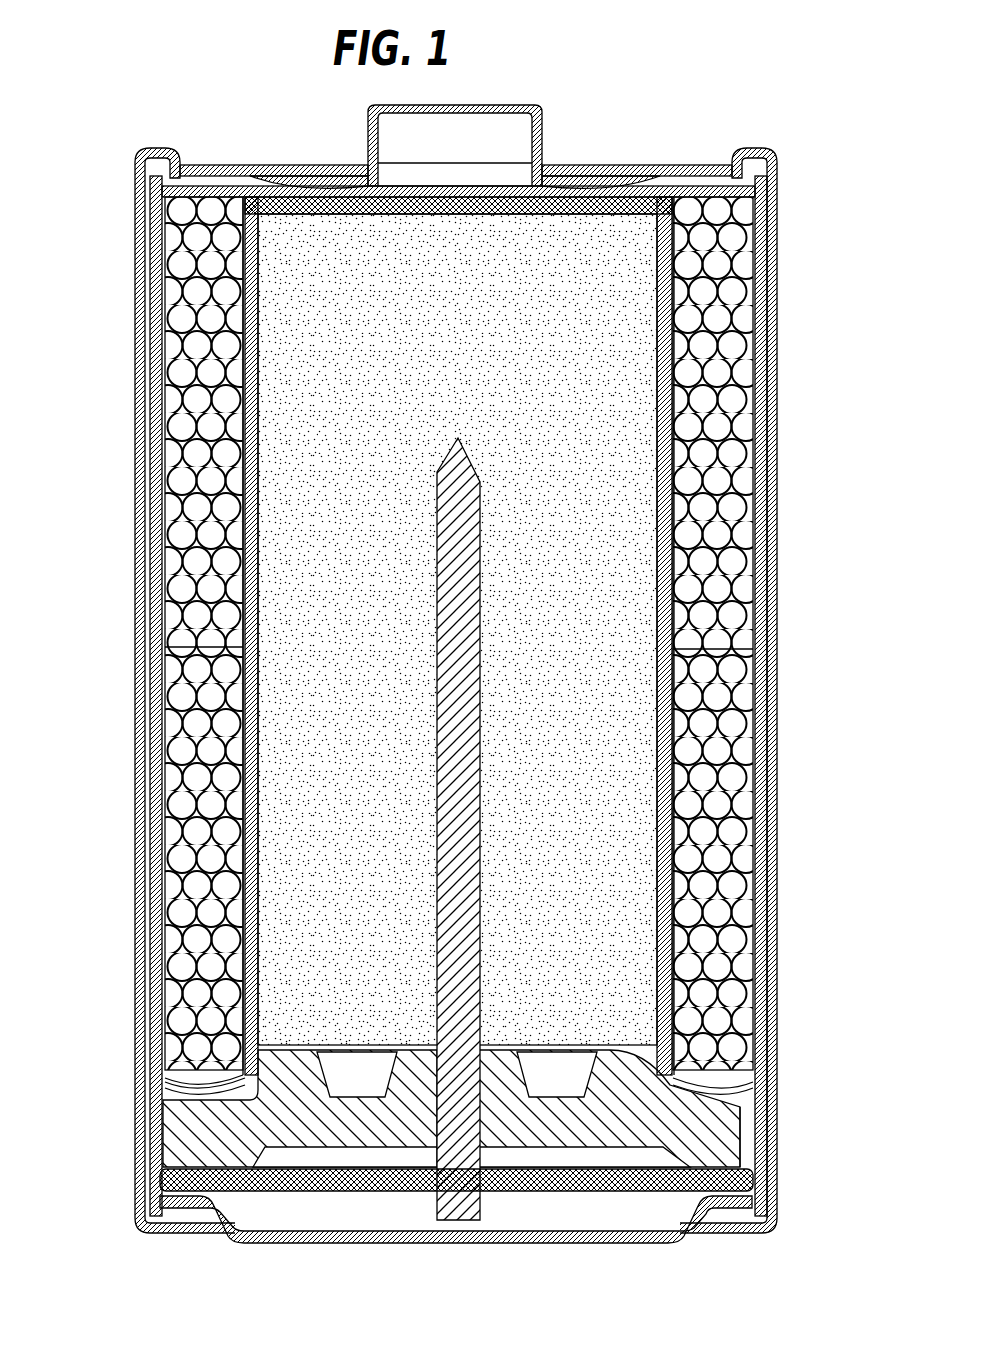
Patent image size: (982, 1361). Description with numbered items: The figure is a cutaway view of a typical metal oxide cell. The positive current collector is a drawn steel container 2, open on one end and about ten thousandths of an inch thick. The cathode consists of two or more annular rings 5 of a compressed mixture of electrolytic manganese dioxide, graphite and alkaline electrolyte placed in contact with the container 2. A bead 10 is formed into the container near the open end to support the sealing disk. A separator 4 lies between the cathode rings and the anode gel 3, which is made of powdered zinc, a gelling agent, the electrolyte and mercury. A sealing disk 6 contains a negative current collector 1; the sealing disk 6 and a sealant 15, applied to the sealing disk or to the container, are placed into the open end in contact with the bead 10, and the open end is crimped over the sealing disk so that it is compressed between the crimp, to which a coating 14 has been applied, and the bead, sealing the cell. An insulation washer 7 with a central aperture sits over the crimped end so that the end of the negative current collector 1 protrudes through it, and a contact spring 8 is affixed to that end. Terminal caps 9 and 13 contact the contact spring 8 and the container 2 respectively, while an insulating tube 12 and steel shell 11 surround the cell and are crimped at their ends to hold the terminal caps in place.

The negative current collector 1 is at (322, 396).
The container 2 is at (150, 312).
The anode gel 3 is at (447, 452).
The separator 4 is at (240, 692).
The annular rings 5 is at (172, 809).
The sealing disk 6 is at (240, 1003).
The insulation washer 7 is at (142, 1168).
The contact spring 8 is at (165, 1190).
The terminal cap 9 is at (216, 1238).
The bead 10 is at (760, 1090).
The steel shell 11 is at (769, 598).
The insulating tube 12 is at (775, 866).
The terminal cap 13 is at (546, 128).
The coating 14 is at (772, 711).
The sealant 15 is at (775, 1120).